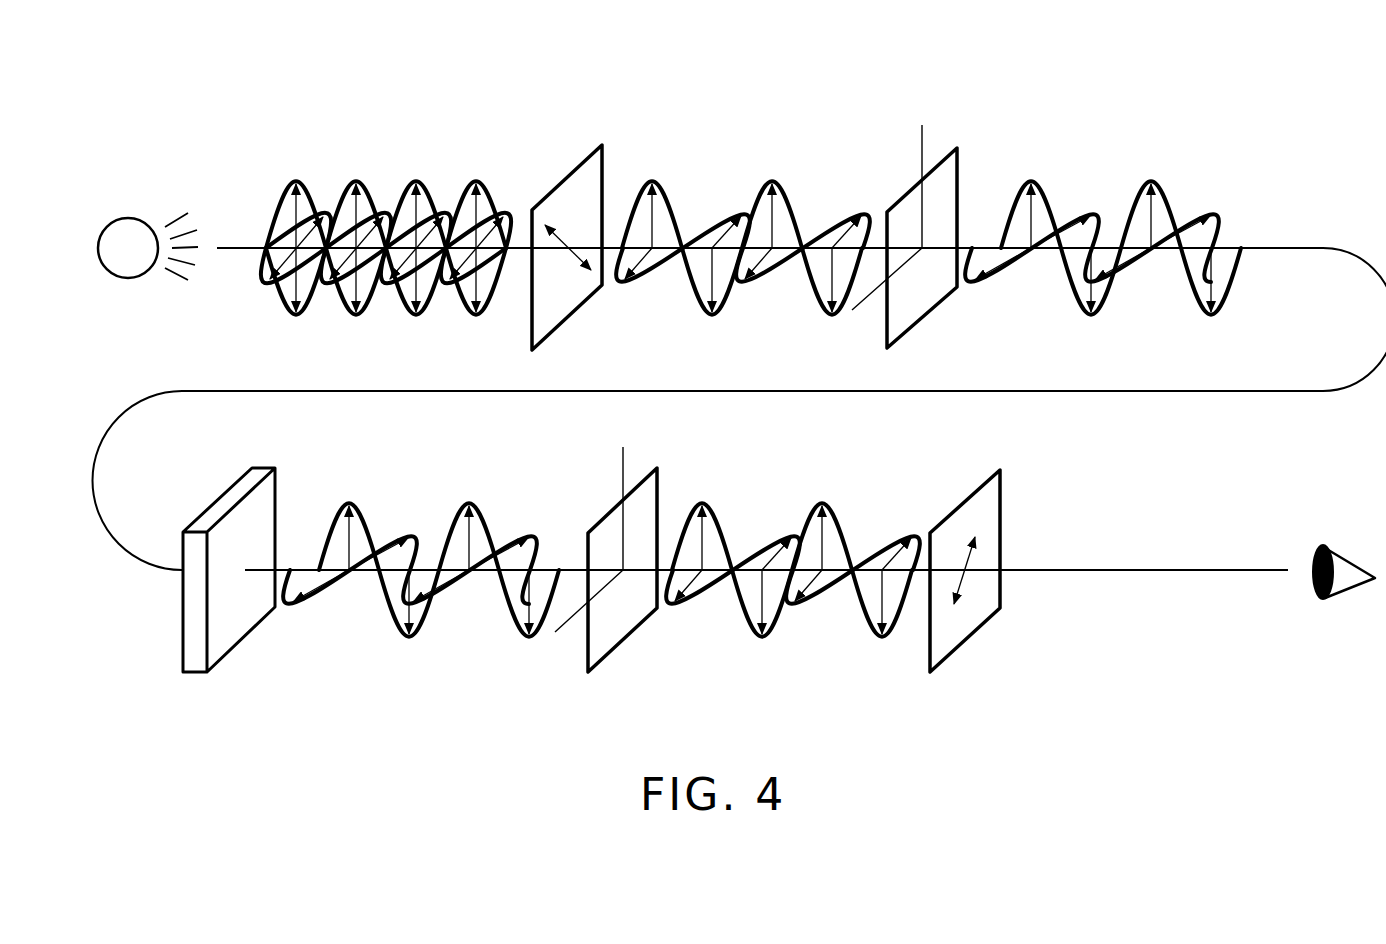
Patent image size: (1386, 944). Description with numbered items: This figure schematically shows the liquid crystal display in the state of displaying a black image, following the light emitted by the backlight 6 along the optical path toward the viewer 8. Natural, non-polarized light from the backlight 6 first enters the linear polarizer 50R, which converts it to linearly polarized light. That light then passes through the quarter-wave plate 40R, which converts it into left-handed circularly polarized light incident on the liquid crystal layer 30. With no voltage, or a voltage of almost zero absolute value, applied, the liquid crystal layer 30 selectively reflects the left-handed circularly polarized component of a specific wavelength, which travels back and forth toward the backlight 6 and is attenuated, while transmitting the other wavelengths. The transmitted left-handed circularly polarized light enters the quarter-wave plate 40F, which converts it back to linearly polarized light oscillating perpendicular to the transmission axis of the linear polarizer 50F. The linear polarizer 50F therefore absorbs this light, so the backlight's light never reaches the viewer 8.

The backlight 6 is at (132, 218).
The linear polarizer 50R is at (597, 170).
The quarter-wave plate 40R is at (950, 170).
The liquid crystal layer 30 is at (270, 493).
The quarter-wave plate 40F is at (651, 497).
The linear polarizer 50F is at (993, 495).
The viewer 8 is at (1350, 556).